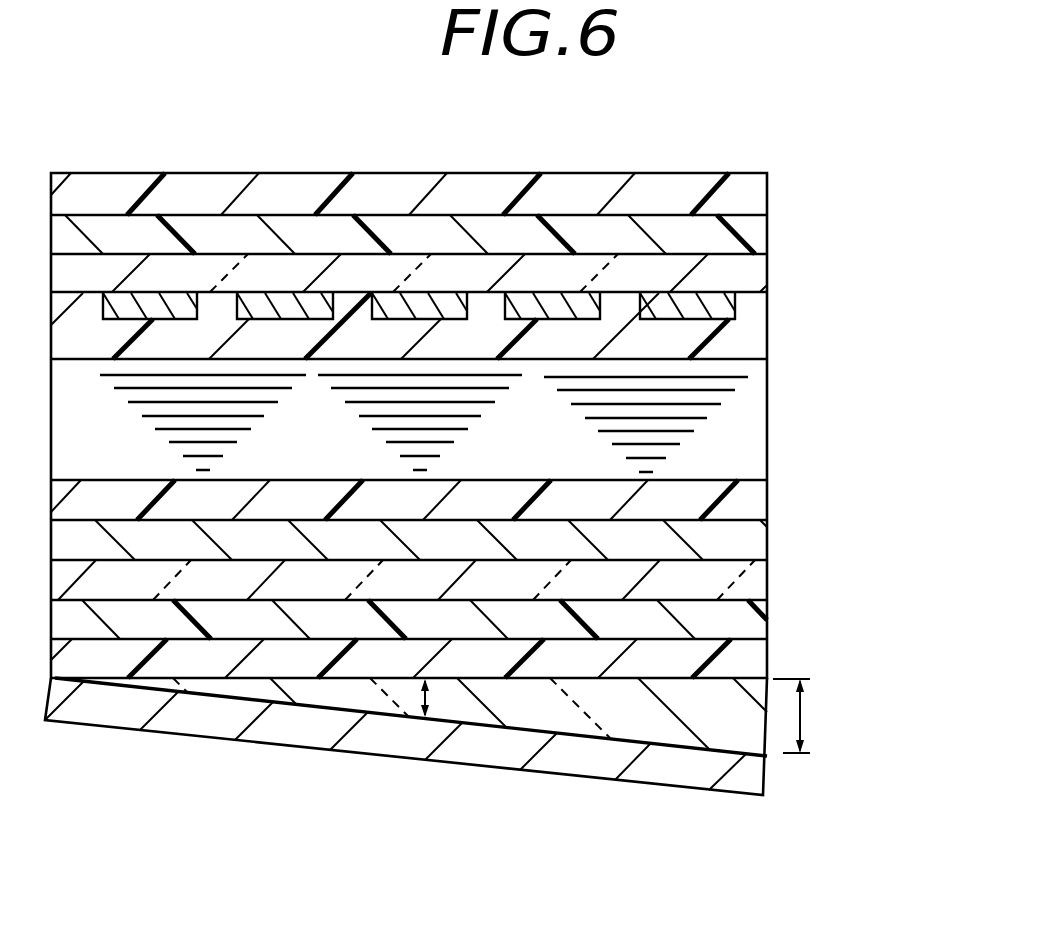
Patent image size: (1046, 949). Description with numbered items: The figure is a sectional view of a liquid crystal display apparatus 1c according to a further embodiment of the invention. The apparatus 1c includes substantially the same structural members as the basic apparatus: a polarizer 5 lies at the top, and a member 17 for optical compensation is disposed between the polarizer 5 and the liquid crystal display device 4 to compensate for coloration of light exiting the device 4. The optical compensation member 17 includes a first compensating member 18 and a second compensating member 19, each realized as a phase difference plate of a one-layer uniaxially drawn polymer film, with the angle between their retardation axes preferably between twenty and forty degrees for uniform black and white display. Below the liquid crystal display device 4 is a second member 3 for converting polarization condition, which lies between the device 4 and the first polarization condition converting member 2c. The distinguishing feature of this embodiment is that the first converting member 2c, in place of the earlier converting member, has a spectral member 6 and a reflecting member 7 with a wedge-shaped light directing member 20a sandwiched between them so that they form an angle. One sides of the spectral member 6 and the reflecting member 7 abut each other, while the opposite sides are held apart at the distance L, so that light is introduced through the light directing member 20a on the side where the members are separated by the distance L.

The liquid crystal display apparatus 1c is at (702, 169).
The polarizer 5 is at (753, 195).
The member for optical compensation 17 is at (496, 236).
The first compensating member 18 is at (410, 234).
The second compensating member 19 is at (757, 232).
The liquid crystal display device 4 is at (780, 255).
The second member for converting polarization condition 3 is at (748, 620).
The spectral member 6 is at (748, 657).
The first polarization condition converting member 2c is at (484, 746).
The reflecting member 7 is at (750, 772).
The wedge-shaped light directing member 20a is at (457, 758).
The distance L is at (802, 715).